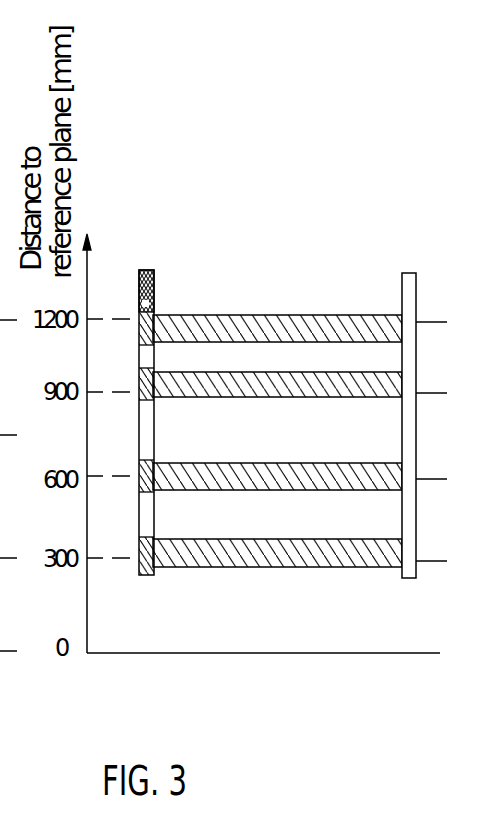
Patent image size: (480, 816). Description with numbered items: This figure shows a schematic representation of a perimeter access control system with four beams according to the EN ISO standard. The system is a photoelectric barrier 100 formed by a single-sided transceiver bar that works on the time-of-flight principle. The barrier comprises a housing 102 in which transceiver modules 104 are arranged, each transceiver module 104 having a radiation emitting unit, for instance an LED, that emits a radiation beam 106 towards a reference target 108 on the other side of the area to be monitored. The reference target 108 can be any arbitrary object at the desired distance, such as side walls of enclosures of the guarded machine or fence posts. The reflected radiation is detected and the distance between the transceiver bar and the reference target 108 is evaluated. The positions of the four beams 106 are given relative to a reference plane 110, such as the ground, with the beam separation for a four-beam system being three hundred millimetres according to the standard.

The photoelectric barrier 100 is at (143, 269).
The housing 102 is at (151, 519).
The transceiver module 104 is at (156, 357).
The radiation beam 106 is at (276, 315).
The reference target 108 is at (407, 273).
The reference plane 110 is at (278, 653).